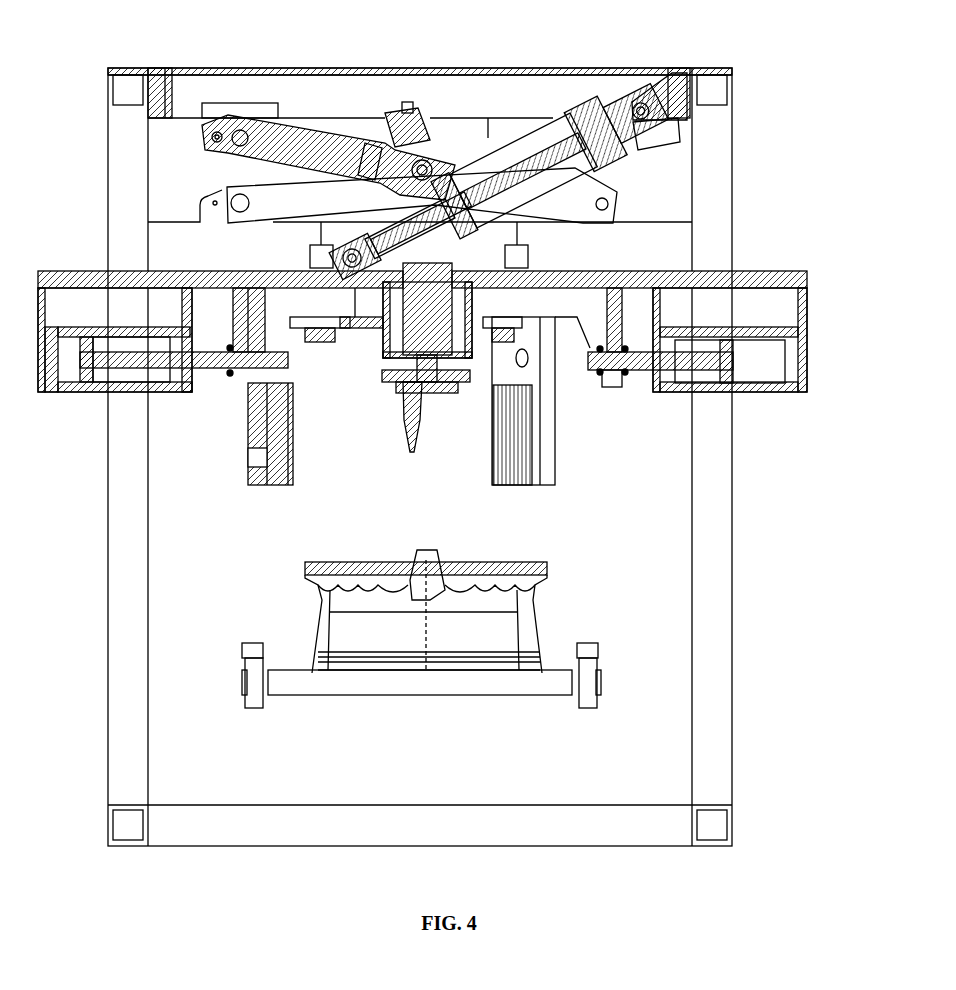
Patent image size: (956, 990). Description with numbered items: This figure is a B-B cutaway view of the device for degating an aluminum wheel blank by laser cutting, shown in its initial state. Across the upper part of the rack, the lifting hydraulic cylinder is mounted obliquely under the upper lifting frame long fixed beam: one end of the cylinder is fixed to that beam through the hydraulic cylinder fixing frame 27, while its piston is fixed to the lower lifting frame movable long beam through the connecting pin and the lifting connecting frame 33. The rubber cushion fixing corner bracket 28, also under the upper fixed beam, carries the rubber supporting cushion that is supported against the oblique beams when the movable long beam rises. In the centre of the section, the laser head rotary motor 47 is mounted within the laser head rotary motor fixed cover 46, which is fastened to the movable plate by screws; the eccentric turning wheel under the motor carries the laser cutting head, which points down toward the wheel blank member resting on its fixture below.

The hydraulic cylinder fixing frame 27 is at (667, 93).
The rubber cushion fixing corner bracket 28 is at (419, 114).
The lifting connecting frame 33 is at (325, 257).
The laser head rotary motor fixed cover 46 is at (468, 335).
The laser head rotary motor 47 is at (425, 338).